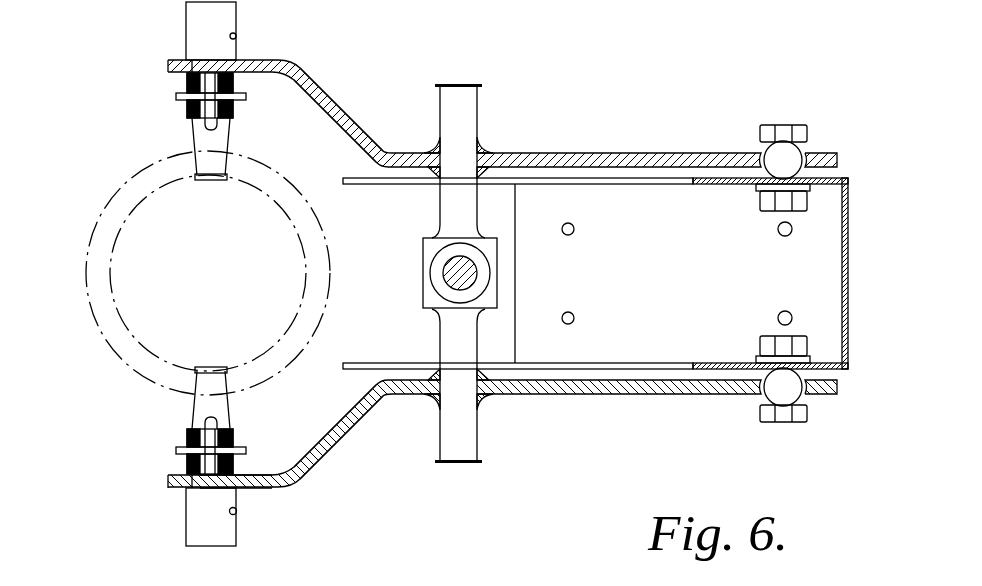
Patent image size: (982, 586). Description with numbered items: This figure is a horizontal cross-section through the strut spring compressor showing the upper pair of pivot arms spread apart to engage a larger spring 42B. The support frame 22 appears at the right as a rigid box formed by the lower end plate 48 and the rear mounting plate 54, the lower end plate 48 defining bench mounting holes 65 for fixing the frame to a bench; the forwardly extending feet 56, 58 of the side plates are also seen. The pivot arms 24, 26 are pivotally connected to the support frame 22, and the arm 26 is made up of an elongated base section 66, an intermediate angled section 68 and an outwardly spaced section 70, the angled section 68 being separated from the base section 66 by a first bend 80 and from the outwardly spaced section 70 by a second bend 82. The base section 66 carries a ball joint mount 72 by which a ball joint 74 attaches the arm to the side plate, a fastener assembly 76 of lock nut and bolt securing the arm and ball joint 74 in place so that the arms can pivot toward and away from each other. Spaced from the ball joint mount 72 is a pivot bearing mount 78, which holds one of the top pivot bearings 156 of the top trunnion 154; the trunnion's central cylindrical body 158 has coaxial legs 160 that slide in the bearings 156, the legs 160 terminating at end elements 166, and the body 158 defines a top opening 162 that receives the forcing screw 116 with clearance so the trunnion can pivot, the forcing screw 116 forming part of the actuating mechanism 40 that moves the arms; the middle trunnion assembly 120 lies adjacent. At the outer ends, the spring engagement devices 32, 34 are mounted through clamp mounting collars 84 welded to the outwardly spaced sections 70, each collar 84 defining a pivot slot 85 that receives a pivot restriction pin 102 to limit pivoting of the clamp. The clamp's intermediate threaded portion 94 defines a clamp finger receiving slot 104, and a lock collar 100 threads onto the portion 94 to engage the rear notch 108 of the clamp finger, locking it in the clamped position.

The support frame 22 is at (618, 144).
The pivot arm 24 is at (505, 153).
The pivot arm 26 is at (637, 404).
The spring engagement device 32 is at (268, 111).
The spring engagement device 34 is at (264, 449).
The actuating mechanism 40 is at (463, 256).
The larger spring 42B is at (125, 185).
The lower end plate 48 is at (799, 273).
The rear mounting plate 54 is at (849, 258).
The foot 56 is at (357, 186).
The foot 58 is at (368, 365).
The bench mounting holes 65 is at (574, 317).
The elongated base section 66 is at (670, 153).
The intermediate angled section 68 is at (318, 100).
The outwardly spaced section 70 is at (178, 482).
The ball joint mount 72 is at (810, 395).
The ball joint 74 is at (795, 158).
The fastener assembly 76 is at (796, 112).
The pivot bearing mount 78 is at (486, 396).
The first bend 80 is at (387, 395).
The second bend 82 is at (290, 484).
The clamp mounting collar 84 is at (207, 548).
The pivot slot 85 is at (235, 36).
The intermediate threaded portion 94 is at (192, 108).
The lock collar 100 is at (188, 450).
The pivot restriction pin 102 is at (236, 511).
The clamp finger receiving slot 104 is at (210, 465).
The rear notch 108 is at (214, 443).
The forcing screw 116 is at (480, 266).
The middle trunnion assembly 120 is at (500, 220).
The top trunnion 154 is at (468, 256).
The top pivot bearings 156 is at (440, 150).
The central cylindrical body 158 is at (430, 300).
The coaxial legs 160 is at (470, 115).
The top opening 162 is at (445, 280).
The end cap 166 is at (484, 86).